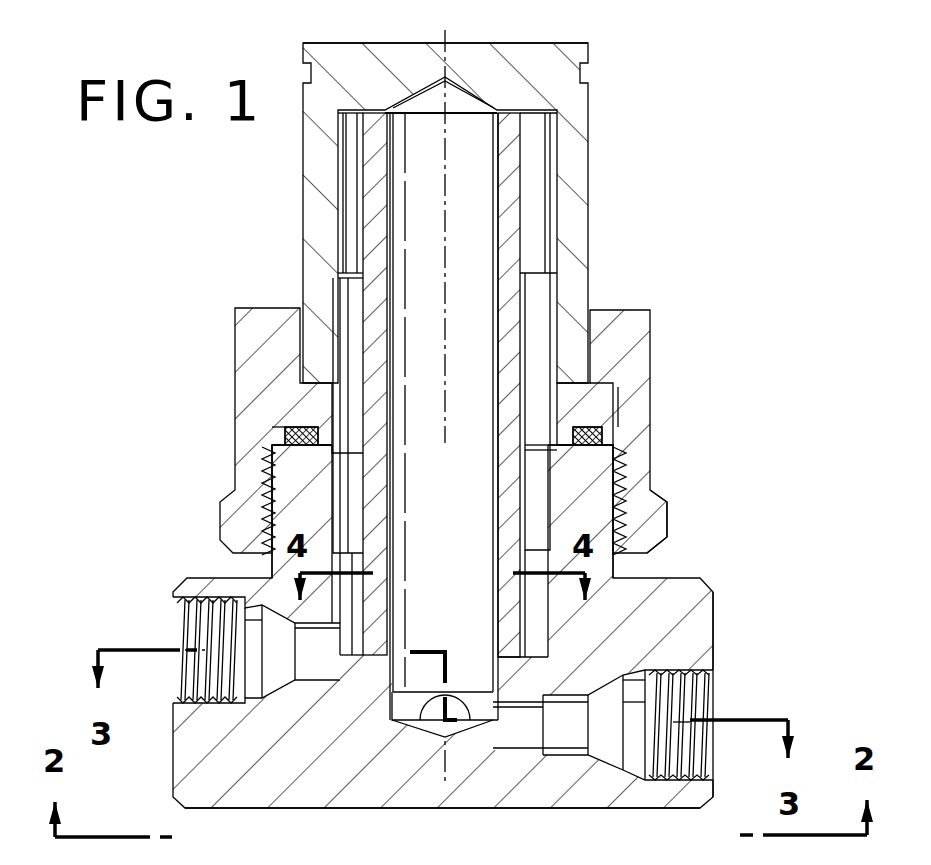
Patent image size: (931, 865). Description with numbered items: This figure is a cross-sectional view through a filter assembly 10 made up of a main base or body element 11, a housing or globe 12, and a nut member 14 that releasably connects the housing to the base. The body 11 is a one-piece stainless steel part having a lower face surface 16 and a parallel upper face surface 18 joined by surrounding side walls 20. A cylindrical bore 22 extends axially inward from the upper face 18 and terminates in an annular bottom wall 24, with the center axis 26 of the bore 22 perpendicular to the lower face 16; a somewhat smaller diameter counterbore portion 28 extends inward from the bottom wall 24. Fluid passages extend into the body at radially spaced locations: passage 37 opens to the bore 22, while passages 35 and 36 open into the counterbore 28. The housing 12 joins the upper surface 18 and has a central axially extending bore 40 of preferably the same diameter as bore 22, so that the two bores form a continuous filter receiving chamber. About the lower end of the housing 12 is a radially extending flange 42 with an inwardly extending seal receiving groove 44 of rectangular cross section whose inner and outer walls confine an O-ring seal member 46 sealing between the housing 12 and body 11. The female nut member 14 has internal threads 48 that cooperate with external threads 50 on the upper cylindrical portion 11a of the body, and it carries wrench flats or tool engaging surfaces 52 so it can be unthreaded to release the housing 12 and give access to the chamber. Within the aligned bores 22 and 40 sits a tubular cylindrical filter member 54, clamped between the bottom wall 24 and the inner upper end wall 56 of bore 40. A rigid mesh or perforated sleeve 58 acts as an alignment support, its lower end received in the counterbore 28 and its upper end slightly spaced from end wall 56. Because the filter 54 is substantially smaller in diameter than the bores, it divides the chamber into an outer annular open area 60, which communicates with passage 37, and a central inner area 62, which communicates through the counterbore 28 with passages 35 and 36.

The filter assembly 10 is at (693, 292).
The body element 11 is at (715, 582).
The upper cylindrical portion 11a is at (288, 513).
The housing 12 is at (275, 175).
The nut member 14 is at (668, 456).
The lower face surface 16 is at (295, 810).
The upper face surface 18 is at (285, 437).
The side walls 20 is at (713, 617).
The cylindrical bore 22 is at (388, 435).
The annular bottom wall 24 is at (550, 643).
The center axis 26 is at (445, 250).
The counterbore portion 28 is at (393, 675).
The fluid passage 35 is at (716, 695).
The fluid passage 36 is at (440, 740).
The fluid passage 37 is at (165, 630).
The axial bore 40 is at (540, 222).
The radially extending flange 42 is at (615, 396).
The seal receiving groove 44 is at (602, 437).
The O-ring seal member 46 is at (622, 412).
The internal threads 48 is at (625, 518).
The external threads 50 is at (622, 490).
The wrench flats 52 is at (220, 518).
The filter member 54 is at (520, 185).
The inner upper end wall 56 is at (588, 136).
The sleeve 58 is at (490, 318).
The outer annular open area 60 is at (345, 228).
The central inner area 62 is at (457, 92).